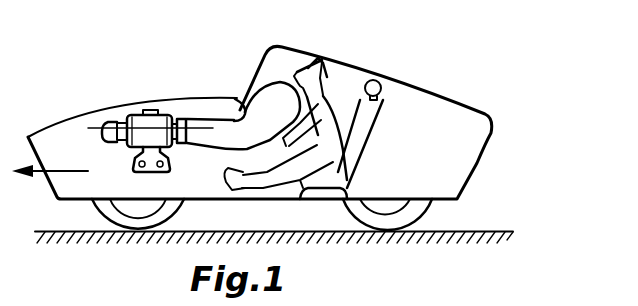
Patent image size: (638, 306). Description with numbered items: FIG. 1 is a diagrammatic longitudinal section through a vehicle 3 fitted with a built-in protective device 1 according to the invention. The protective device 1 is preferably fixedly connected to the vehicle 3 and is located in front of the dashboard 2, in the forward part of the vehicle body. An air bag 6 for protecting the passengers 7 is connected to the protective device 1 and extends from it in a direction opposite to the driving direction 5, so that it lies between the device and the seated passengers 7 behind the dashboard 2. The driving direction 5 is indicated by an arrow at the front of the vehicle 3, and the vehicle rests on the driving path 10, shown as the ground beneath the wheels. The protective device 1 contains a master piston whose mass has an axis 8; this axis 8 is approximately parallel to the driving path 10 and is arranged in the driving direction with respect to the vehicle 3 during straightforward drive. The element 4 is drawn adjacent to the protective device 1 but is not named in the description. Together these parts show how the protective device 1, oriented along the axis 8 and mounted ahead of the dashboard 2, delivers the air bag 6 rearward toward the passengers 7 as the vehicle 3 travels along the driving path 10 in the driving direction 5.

The protective device 1 is at (143, 128).
The dashboard 2 is at (235, 108).
The vehicle 3 is at (388, 138).
The engine mount 4 is at (152, 160).
The driving direction 5 is at (53, 171).
The air bag 6 is at (273, 99).
The passengers 7 is at (315, 112).
The axis 8 is at (89, 128).
The driving path 10 is at (483, 231).